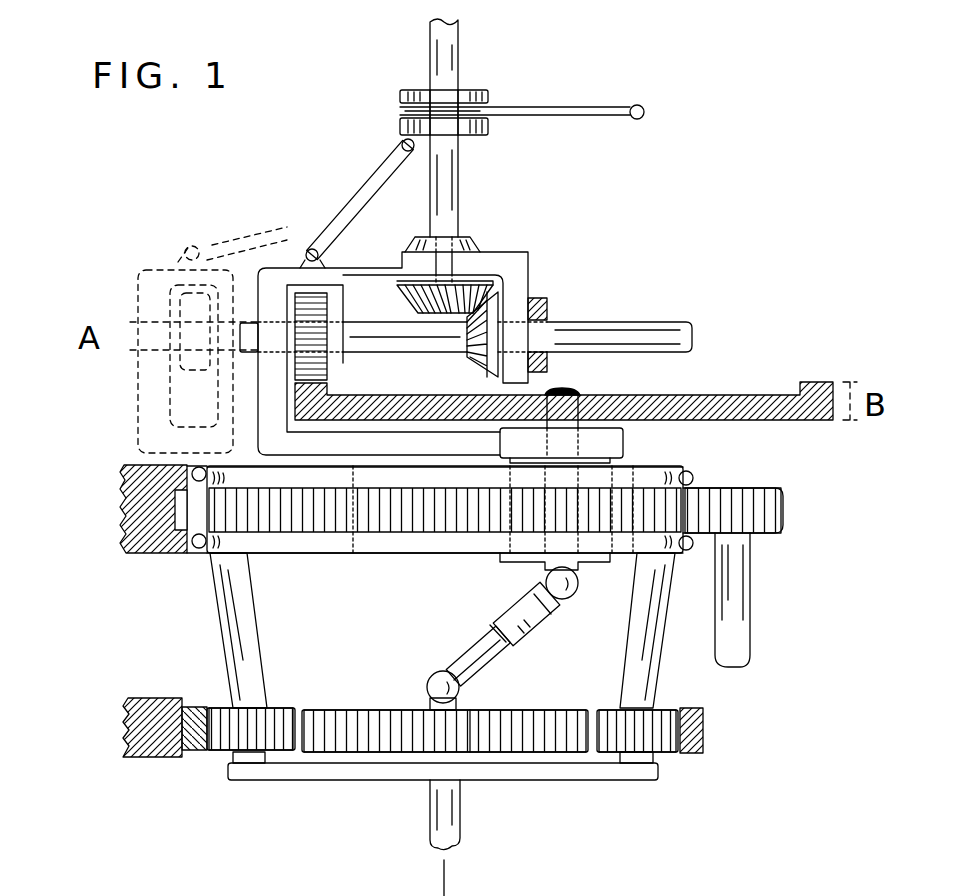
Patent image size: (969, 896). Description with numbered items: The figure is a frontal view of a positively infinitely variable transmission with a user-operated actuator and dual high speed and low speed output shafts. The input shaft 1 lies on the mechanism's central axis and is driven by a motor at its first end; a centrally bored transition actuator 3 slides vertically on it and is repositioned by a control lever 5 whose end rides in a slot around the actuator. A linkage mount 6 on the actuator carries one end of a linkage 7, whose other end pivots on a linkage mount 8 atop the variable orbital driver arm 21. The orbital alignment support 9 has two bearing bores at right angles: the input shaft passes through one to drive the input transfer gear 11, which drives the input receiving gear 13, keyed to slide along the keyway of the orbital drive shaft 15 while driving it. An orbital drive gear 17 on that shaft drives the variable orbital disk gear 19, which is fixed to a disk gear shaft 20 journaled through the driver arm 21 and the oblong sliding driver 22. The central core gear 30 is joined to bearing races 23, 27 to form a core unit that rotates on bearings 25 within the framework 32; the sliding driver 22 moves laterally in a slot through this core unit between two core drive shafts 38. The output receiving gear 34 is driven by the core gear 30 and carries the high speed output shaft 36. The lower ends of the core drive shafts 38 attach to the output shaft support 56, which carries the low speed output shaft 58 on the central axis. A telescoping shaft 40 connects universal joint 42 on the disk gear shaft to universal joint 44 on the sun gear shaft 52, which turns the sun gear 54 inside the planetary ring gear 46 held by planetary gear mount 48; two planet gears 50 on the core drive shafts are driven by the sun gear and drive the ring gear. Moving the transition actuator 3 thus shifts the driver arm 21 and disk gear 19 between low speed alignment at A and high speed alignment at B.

The input shaft 1 is at (428, 48).
The transition actuator 3 is at (490, 90).
The control lever 5 is at (648, 112).
The linkage mount 6 is at (402, 138).
The linkage 7 is at (360, 183).
The linkage mount 8 is at (295, 262).
The orbital alignment support 9 is at (530, 248).
The input transfer gear 11 is at (403, 287).
The input receiving gear 13 is at (475, 373).
The orbital drive shaft 15 is at (620, 320).
The orbital drive gear 17 is at (330, 368).
The variable orbital disk gear 19 is at (742, 395).
The disk gear shaft 20 is at (565, 393).
The variable orbital driver arm 21 is at (625, 438).
The sliding driver 22 is at (512, 560).
The bearing race 23 is at (678, 468).
The bearings 25 is at (197, 549).
The bearing race 27 is at (400, 555).
The central core gear 30 is at (310, 510).
The framework 32 is at (120, 508).
The output receiving gear 34 is at (785, 510).
The high speed output shaft 36 is at (750, 618).
The core drive shafts 38 is at (226, 650).
The telescoping shaft 40 is at (470, 650).
The universal joint 42 is at (580, 583).
The universal joint 44 is at (430, 675).
The planetary ring gear 46 is at (193, 757).
The planetary gear mount 48 is at (123, 735).
The planet gears 50 is at (290, 708).
The sun gear shaft 52 is at (423, 708).
The sun gear 54 is at (540, 708).
The output shaft support 56 is at (305, 782).
The low speed output shaft 58 is at (462, 818).